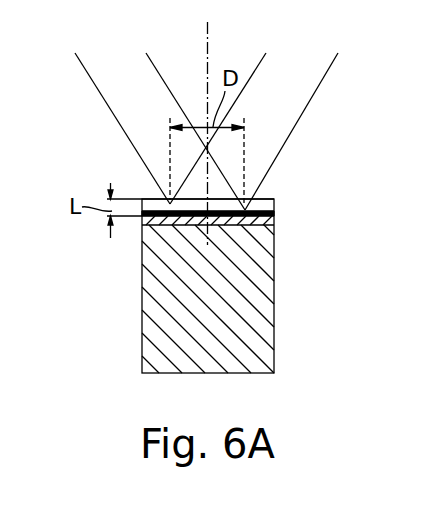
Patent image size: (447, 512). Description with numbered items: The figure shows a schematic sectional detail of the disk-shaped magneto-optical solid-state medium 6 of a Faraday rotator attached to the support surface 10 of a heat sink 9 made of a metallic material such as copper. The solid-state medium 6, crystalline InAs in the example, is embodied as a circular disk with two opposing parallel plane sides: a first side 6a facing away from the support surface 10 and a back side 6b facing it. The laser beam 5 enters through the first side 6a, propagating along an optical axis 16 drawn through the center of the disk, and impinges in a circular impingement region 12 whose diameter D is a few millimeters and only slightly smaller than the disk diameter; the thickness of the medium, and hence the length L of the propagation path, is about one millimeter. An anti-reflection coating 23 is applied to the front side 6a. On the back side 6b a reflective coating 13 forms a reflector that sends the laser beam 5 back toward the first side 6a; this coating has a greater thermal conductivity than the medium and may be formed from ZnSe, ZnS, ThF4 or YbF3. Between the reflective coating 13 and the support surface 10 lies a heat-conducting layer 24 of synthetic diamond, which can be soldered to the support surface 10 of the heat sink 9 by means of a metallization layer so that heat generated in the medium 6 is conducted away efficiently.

The laser beam 5 is at (102, 96).
The optical axis 16 is at (206, 43).
The disk-shaped magneto-optical solid-state medium 6 is at (142, 199).
The first side 6a is at (169, 199).
The impingement region 12 is at (220, 199).
The anti-reflection coating 23 is at (268, 199).
The back side 6b is at (275, 205).
The reflective coating 13 is at (275, 215).
The heat-conducting layer 24 is at (142, 226).
The support surface 10 is at (142, 268).
The heat sink 9 is at (153, 307).